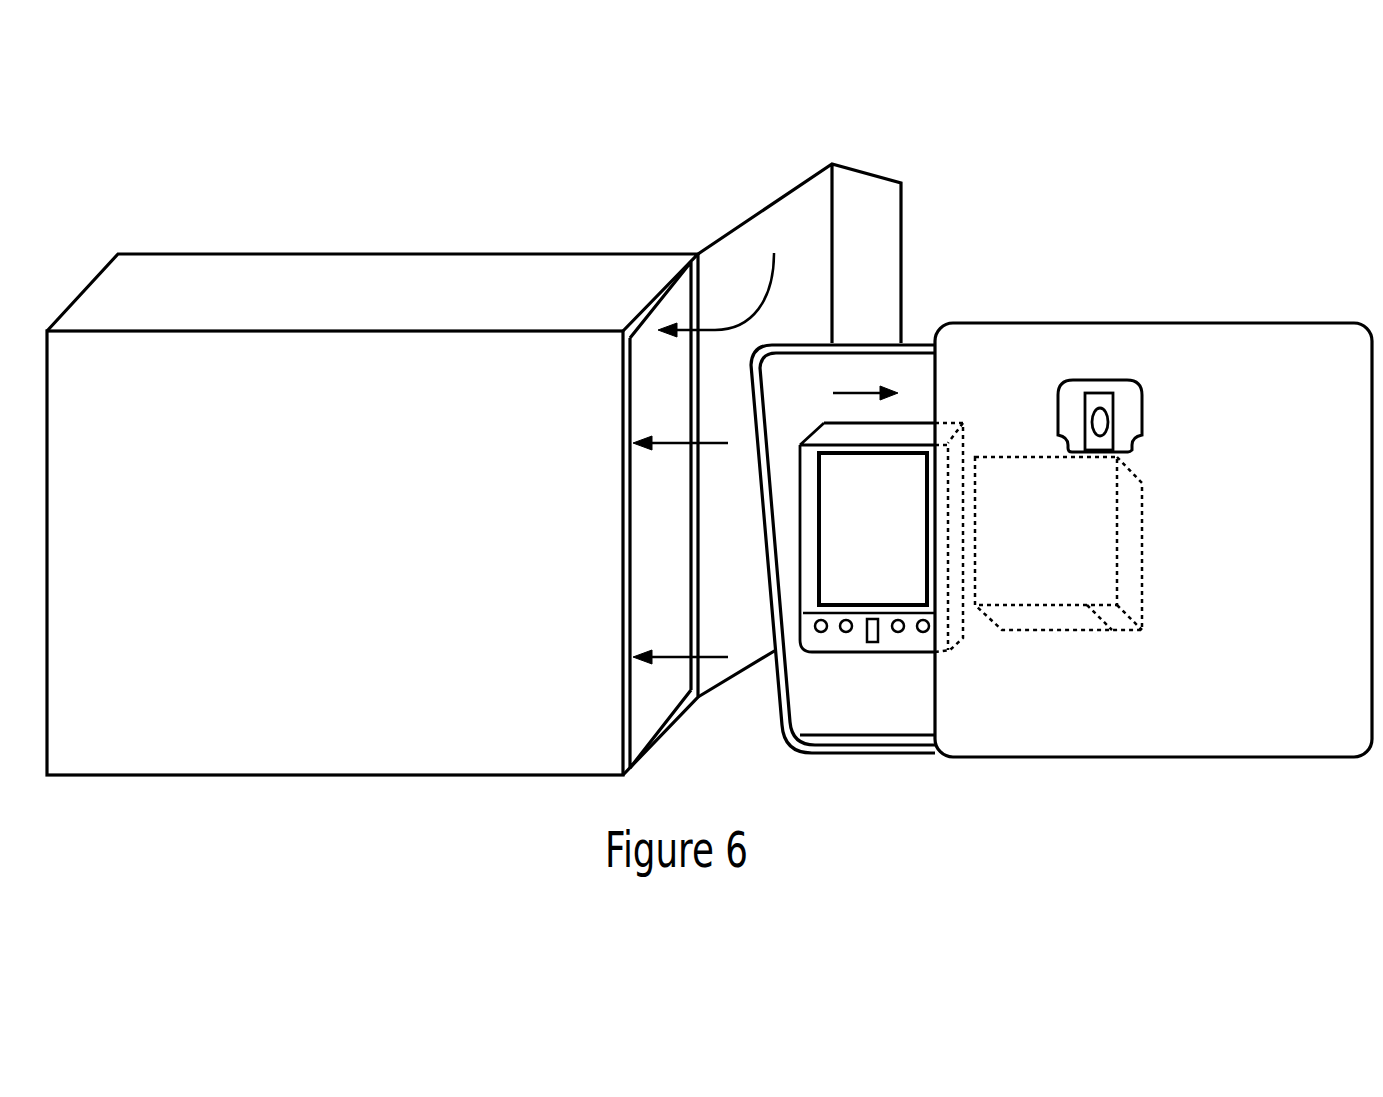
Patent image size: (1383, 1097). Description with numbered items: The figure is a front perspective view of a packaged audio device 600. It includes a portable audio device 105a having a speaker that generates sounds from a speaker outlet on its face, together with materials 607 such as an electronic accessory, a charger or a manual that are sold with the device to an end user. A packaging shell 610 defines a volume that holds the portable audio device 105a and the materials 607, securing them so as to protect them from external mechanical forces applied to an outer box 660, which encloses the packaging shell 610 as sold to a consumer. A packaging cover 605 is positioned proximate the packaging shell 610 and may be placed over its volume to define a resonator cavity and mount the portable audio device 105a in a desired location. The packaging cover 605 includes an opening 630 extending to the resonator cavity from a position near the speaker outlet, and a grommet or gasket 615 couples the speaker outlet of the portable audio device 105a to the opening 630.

The packaged audio device 600 is at (942, 170).
The outer box 660 is at (372, 287).
The packaging shell 610 is at (907, 507).
The packaging cover 605 is at (1153, 505).
The grommet or gasket 615 is at (1123, 396).
The opening 630 is at (1100, 423).
The portable audio device 105a is at (917, 647).
The materials 607 is at (1112, 630).